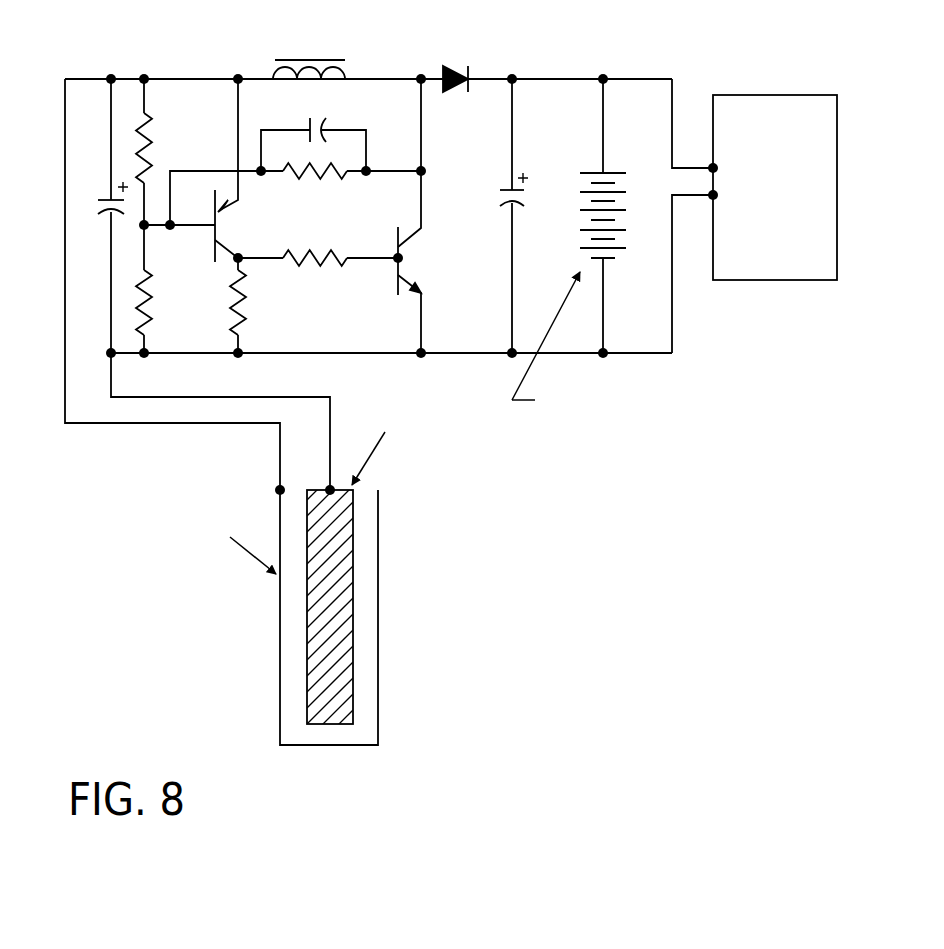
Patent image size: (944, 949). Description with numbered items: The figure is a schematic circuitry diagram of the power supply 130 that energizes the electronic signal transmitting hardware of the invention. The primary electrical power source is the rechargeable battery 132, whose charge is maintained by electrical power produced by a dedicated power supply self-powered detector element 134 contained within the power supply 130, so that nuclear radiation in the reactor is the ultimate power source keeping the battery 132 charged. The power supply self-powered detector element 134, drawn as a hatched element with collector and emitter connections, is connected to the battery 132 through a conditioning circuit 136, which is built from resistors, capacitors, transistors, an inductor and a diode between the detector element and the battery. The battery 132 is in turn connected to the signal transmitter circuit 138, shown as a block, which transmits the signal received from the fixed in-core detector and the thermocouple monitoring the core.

The power supply 130 is at (698, 609).
The rechargeable battery 132 is at (599, 168).
The power supply self-powered detector element 134 is at (378, 710).
The conditioning circuit 136 is at (122, 80).
The signal transmitter circuit 138 is at (755, 95).